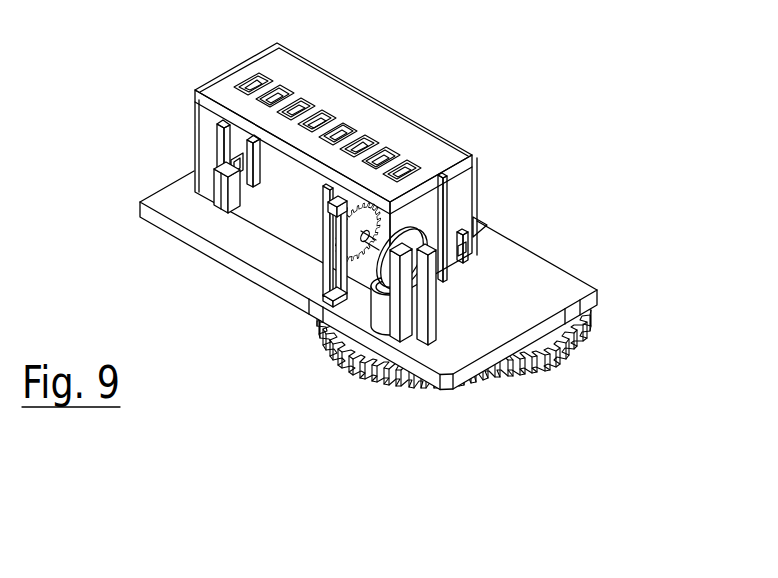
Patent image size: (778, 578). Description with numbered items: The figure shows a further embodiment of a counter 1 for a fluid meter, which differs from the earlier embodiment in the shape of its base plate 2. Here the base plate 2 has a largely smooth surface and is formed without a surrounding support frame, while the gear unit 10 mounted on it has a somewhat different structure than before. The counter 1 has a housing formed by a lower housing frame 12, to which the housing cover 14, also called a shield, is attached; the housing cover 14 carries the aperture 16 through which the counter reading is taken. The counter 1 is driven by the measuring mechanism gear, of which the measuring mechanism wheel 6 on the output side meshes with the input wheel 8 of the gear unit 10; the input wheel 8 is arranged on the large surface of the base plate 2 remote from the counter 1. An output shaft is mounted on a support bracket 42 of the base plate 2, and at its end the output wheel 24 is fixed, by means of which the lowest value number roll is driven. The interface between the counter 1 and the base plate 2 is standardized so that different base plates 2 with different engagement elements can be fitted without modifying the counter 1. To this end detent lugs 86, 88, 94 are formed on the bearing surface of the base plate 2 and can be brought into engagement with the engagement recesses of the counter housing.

The counter 1 is at (427, 89).
The base plate 2 is at (512, 258).
The measuring mechanism wheel 6 is at (563, 337).
The input wheel 8 is at (357, 346).
The gear unit 10 is at (458, 302).
The housing frame 12 is at (268, 223).
The housing cover 14 is at (425, 141).
The aperture 16 is at (268, 73).
The output wheel 24 is at (367, 226).
The support bracket 42 is at (436, 319).
The detent lug 86 is at (220, 187).
The detent lug 88 is at (357, 272).
The detent lug 94 is at (461, 244).